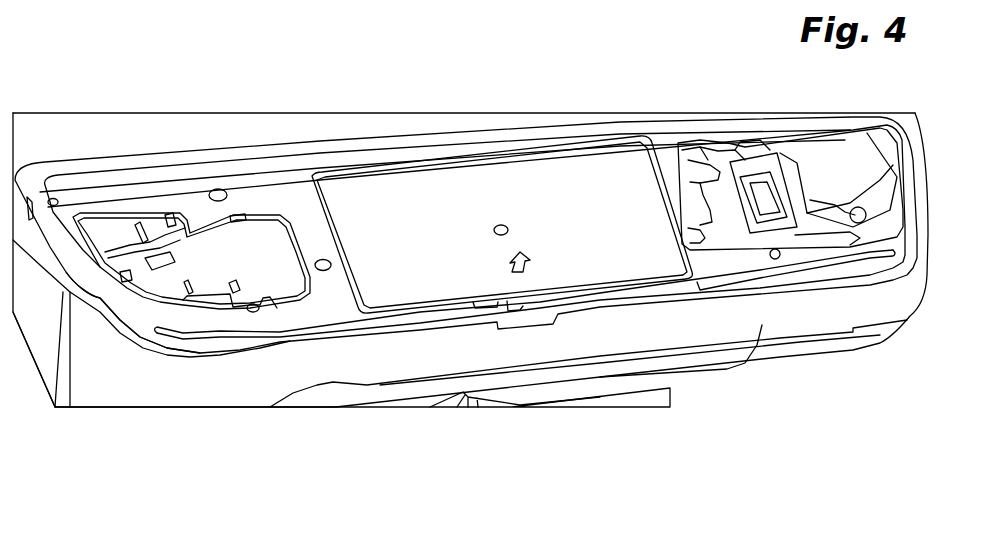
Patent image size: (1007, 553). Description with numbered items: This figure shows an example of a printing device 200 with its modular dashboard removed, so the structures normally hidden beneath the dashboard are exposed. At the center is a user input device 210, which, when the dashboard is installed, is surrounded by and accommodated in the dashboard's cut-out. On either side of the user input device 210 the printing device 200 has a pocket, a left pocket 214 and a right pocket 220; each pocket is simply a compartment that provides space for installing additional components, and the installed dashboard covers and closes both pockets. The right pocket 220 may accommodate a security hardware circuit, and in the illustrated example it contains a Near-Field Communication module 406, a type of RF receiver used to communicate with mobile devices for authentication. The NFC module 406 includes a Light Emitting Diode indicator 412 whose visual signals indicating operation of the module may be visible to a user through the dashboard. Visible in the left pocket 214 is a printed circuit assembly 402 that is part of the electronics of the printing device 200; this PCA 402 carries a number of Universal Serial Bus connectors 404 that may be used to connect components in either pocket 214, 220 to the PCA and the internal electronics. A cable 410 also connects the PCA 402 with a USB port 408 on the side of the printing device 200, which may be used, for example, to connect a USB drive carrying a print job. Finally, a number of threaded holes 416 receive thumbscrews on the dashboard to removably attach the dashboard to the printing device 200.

The printing device 200 is at (303, 98).
The central user input device 210 is at (407, 207).
The left pocket 214 is at (170, 262).
The right pocket 220 is at (837, 168).
The printed circuit assembly 402 is at (298, 113).
The Universal Serial Bus connectors 404 is at (185, 230).
The Near-Field Communication module 406 is at (745, 168).
The USB port 408 is at (55, 407).
The cable 410 is at (150, 200).
The Light Emitting Diode indicator 412 is at (770, 200).
The threaded holes 416 is at (218, 189).